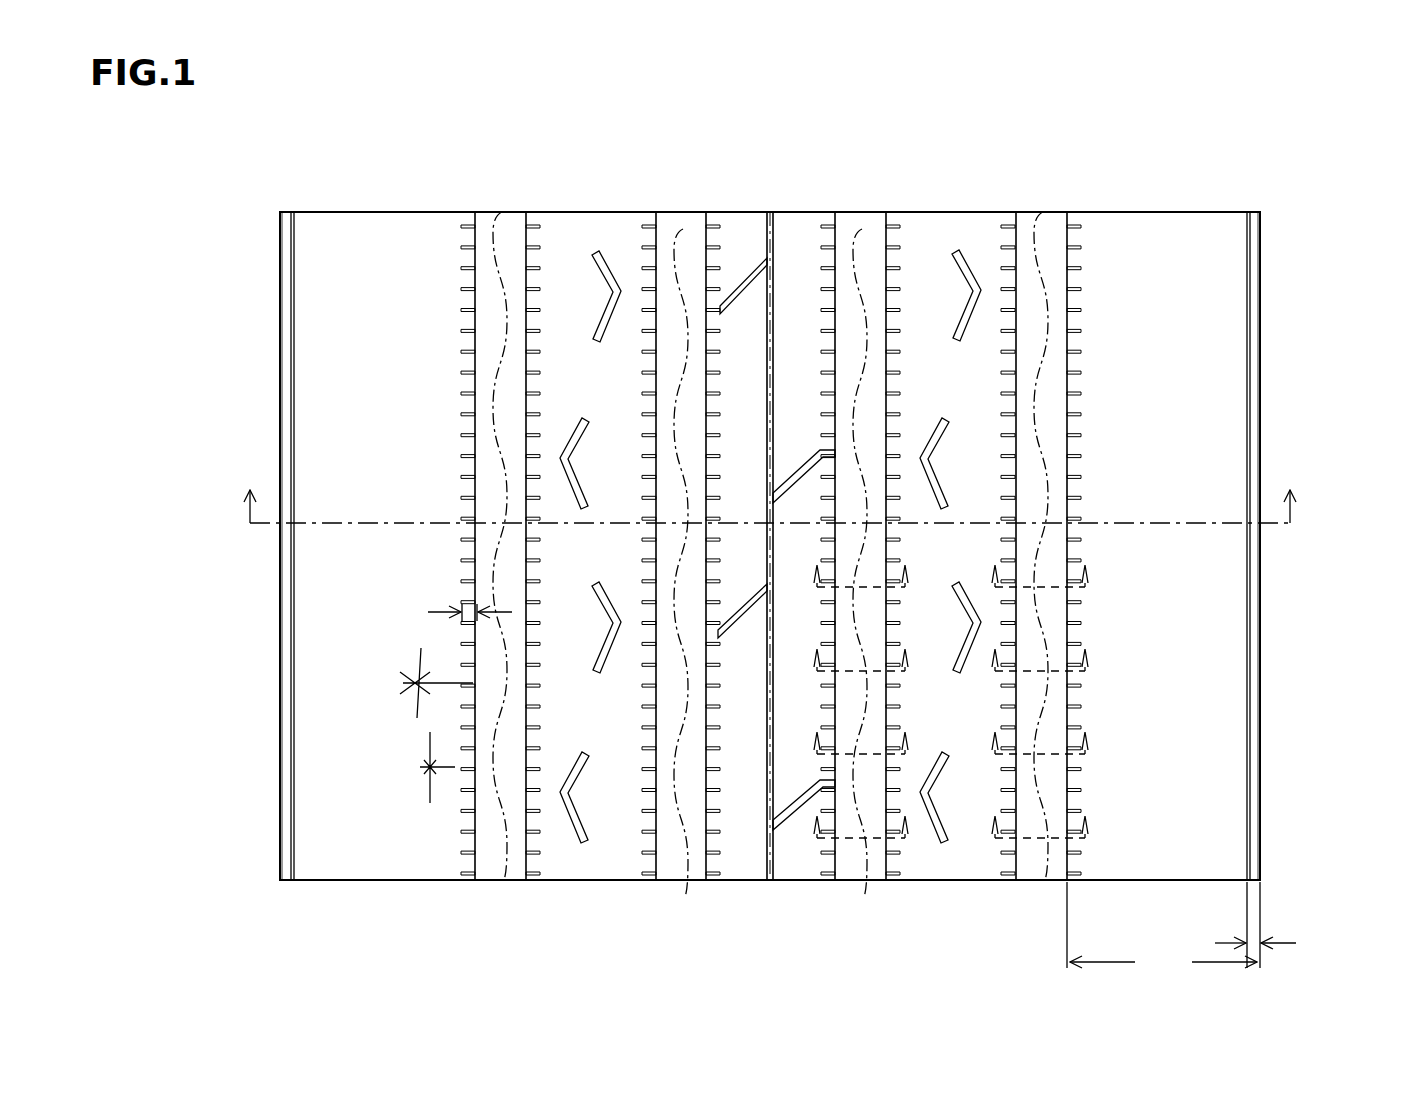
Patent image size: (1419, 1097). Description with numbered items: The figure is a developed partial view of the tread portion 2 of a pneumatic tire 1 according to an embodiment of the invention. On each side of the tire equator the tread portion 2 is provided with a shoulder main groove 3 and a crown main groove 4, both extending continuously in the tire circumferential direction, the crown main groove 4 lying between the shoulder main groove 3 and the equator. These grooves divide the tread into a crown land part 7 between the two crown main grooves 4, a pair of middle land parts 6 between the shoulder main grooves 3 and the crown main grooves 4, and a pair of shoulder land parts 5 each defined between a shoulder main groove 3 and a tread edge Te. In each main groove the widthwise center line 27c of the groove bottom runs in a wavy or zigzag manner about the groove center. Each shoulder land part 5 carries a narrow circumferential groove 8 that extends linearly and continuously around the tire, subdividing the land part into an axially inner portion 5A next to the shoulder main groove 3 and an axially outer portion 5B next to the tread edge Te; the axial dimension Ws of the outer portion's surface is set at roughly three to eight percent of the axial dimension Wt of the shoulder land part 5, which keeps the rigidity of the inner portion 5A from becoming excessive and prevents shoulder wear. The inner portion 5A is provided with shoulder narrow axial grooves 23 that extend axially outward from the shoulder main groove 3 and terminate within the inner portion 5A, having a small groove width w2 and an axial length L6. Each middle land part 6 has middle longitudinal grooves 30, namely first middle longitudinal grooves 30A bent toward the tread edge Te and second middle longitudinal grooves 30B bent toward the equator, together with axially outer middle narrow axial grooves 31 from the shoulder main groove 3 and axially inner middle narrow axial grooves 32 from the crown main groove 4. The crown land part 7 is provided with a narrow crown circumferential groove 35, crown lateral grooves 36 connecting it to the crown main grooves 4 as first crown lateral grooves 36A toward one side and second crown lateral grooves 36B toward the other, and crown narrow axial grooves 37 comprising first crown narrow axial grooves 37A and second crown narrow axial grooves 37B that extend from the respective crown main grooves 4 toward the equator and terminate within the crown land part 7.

The pneumatic tire 1 is at (1352, 143).
The tread portion 2 is at (1340, 182).
The shoulder main groove 3 is at (508, 245).
The crown main groove 4 is at (691, 245).
The shoulder land part 5 is at (381, 250).
The axially inner portion 5A is at (380, 835).
The axially outer portion 5B is at (290, 883).
The middle land part 6 is at (582, 240).
The crown land part 7 is at (798, 250).
The narrow circumferential groove 8 is at (291, 210).
The shoulder narrow axial grooves 23 is at (1080, 470).
The widthwise center line of the groove bottom 27c is at (493, 862).
The middle longitudinal grooves 30 is at (942, 272).
The first middle longitudinal grooves 30A is at (577, 440).
The second middle longitudinal grooves 30B is at (605, 272).
The axially outer middle narrow axial grooves 31 is at (975, 452).
The axially inner middle narrow axial grooves 32 is at (890, 430).
The narrow crown circumferential groove 35 is at (770, 800).
The crown lateral grooves 36 is at (785, 825).
The first crown lateral grooves 36A is at (793, 470).
The second crown lateral grooves 36B is at (742, 622).
The crown narrow axial grooves 37 is at (717, 578).
The first crown narrow axial grooves 37A is at (832, 846).
The second crown narrow axial grooves 37B is at (712, 832).
The tread edge Te is at (280, 245).
The axial length of the shoulder narrow axial grooves L6 is at (465, 608).
The groove width of the shoulder narrow axial grooves w2 is at (422, 767).
The axial dimension of the shoulder land part Wt is at (1162, 929).
The axial dimension of the radially outer surface of the axially outer portion Ws is at (1262, 935).